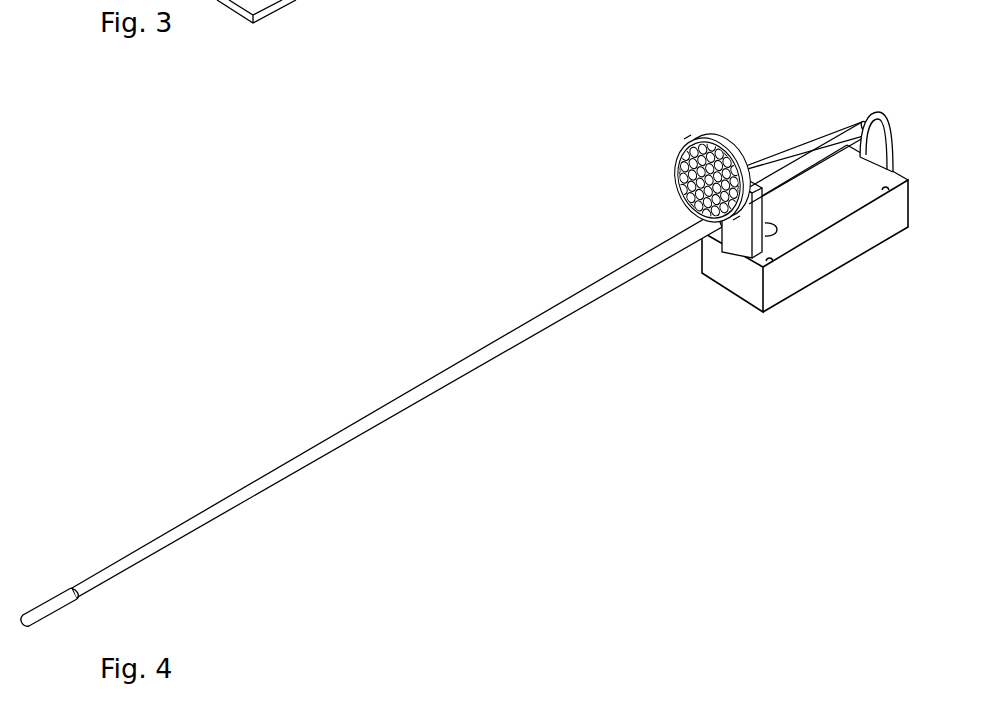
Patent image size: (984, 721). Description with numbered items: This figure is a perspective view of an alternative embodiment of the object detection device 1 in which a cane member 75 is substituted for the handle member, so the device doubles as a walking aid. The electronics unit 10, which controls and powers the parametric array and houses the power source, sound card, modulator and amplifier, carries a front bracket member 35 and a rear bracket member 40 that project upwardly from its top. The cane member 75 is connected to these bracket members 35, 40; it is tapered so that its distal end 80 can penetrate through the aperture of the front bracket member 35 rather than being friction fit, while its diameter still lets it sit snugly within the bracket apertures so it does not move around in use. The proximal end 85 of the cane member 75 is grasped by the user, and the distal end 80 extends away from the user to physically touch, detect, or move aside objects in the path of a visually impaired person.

The object detection device 1 is at (807, 77).
The electronics unit 10 is at (822, 252).
The front bracket member 35 is at (743, 233).
The rear bracket member 40 is at (895, 118).
The cane member 75 is at (371, 419).
The distal end 80 is at (40, 597).
The proximal end 85 is at (855, 118).